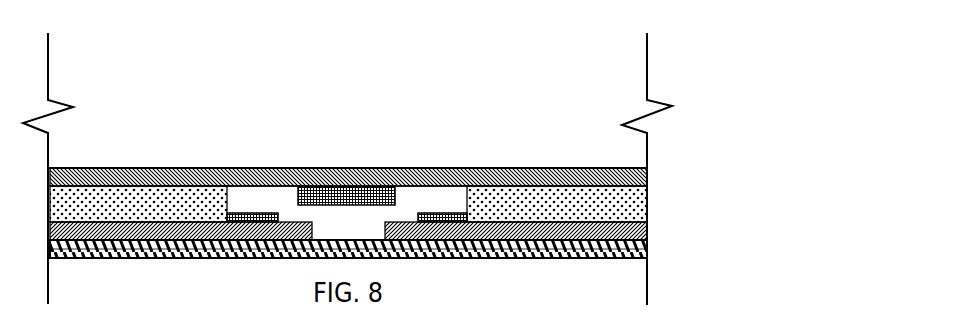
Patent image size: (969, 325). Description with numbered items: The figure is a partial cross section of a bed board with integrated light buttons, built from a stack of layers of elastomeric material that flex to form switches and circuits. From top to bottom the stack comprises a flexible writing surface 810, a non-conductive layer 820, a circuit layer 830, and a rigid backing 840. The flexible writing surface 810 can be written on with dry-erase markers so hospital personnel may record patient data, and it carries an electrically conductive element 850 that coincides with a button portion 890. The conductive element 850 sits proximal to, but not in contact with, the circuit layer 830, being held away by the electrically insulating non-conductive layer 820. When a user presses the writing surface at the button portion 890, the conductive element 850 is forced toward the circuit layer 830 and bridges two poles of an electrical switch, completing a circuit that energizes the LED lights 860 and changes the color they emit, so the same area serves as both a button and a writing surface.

The flexible writing surface 810 is at (372, 168).
The non-conductive layer 820 is at (180, 195).
The circuit layer 830 is at (495, 222).
The rigid backing 840 is at (230, 258).
The electrically conductive element 850 is at (307, 187).
The LED lights 860 is at (257, 213).
The button portion 890 is at (354, 150).